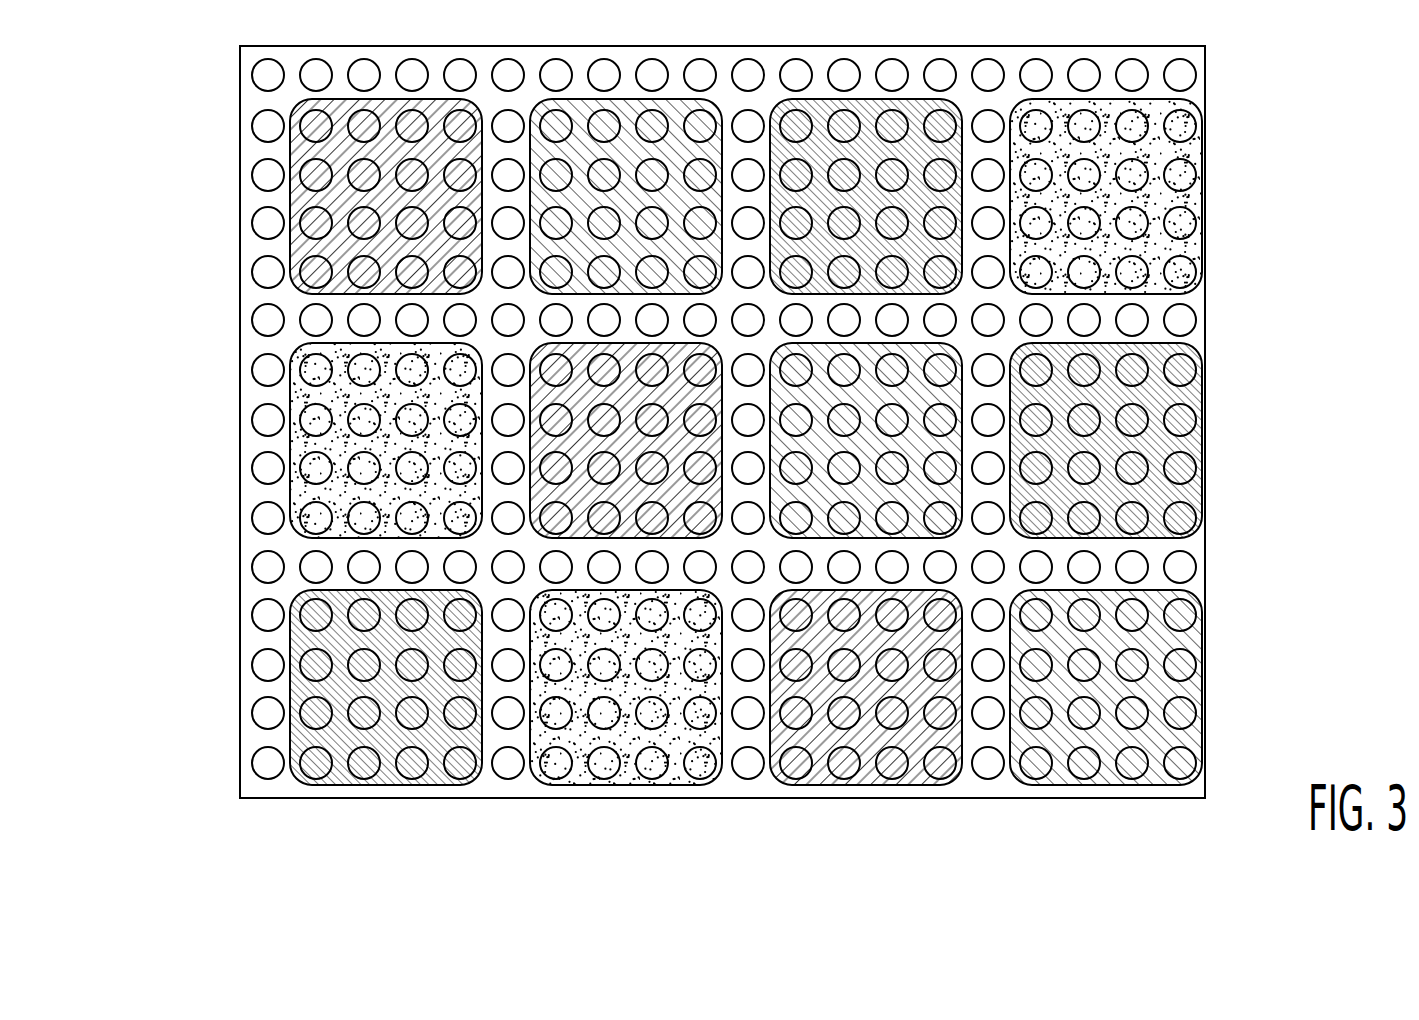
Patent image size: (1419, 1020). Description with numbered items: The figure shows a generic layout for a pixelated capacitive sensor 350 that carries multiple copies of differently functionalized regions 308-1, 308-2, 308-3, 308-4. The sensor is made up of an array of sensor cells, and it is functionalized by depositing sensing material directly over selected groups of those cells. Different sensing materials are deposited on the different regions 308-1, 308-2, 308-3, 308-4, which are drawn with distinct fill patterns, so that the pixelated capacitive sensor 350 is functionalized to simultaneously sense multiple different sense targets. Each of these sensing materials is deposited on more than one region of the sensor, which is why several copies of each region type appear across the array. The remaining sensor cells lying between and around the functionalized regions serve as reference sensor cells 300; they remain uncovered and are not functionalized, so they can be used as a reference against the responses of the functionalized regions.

The reference sensor cells 300 is at (263, 77).
The pixelated capacitive sensor 350 is at (1208, 63).
The functionalized region 308-1 is at (298, 200).
The functionalized region 308-2 is at (678, 105).
The functionalized region 308-3 is at (868, 105).
The functionalized region 308-4 is at (1190, 150).